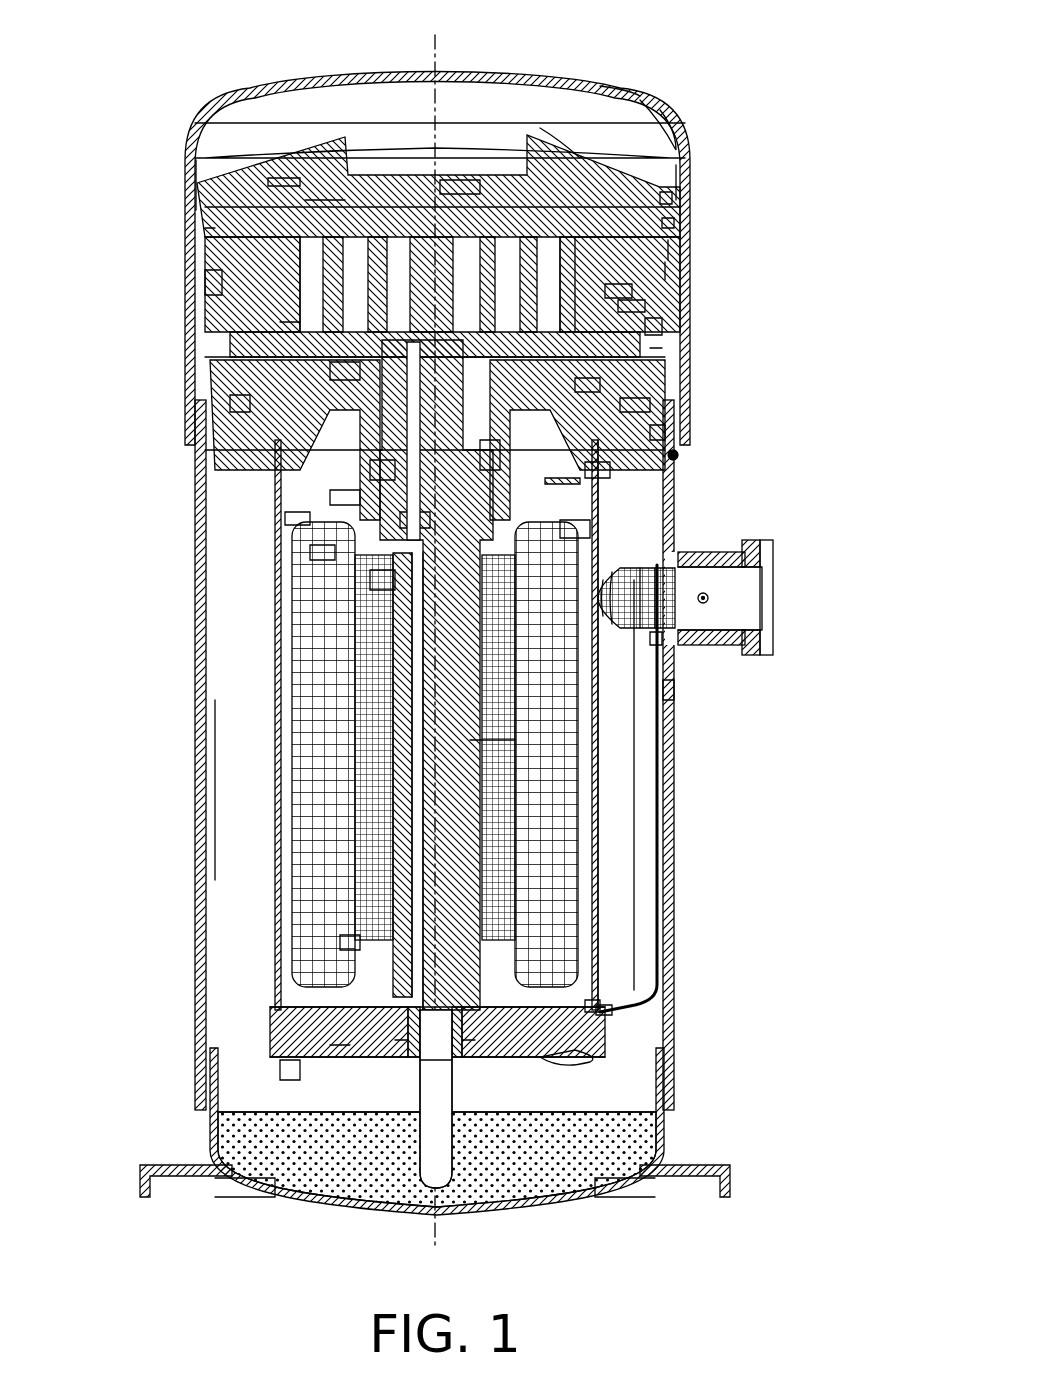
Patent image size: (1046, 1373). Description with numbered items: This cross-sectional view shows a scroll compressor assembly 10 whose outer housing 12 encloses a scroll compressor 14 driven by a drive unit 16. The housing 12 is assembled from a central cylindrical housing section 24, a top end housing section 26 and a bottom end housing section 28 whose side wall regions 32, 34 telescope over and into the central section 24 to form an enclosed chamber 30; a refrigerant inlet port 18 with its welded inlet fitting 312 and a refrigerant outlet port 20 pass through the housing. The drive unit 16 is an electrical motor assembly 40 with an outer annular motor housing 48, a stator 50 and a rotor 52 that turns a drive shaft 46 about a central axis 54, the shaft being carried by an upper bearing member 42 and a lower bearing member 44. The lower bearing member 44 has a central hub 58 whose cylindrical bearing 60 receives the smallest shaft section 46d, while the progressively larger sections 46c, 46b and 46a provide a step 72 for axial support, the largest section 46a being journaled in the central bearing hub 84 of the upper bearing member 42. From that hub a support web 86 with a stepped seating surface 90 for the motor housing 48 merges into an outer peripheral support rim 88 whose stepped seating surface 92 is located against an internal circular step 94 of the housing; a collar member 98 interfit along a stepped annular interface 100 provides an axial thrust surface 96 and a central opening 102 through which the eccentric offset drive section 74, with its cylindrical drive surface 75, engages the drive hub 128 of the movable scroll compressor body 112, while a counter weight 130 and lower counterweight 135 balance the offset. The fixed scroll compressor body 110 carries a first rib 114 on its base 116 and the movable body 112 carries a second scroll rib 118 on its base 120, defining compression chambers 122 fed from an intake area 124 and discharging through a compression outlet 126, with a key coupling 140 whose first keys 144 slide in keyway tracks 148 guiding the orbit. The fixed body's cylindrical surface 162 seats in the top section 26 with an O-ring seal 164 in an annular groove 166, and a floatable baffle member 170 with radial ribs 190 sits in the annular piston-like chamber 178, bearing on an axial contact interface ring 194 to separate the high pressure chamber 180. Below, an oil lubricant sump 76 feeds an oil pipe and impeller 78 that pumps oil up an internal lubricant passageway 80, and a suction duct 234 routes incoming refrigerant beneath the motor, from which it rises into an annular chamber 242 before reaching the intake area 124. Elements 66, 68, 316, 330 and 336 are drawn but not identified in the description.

The scroll compressor assembly 10 is at (168, 663).
The outer housing 12 is at (795, 657).
The scroll compressor 14 is at (668, 352).
The drive unit 16 is at (672, 786).
The refrigerant inlet port 18 is at (750, 600).
The refrigerant outlet port 20 is at (690, 100).
The central cylindrical housing section 24 is at (672, 690).
The top end housing section 26 is at (615, 72).
The bottom end housing section 28 is at (555, 1198).
The enclosed chamber 30 is at (252, 790).
The top side wall region 32 is at (668, 272).
The bottom side wall region 34 is at (662, 1128).
The electrical motor assembly 40 is at (612, 832).
The upper bearing member 42 is at (605, 470).
The lower bearing member 44 is at (620, 1035).
The drive shaft 46 is at (500, 735).
The largest diameter section 46a is at (758, 556).
The drive shaft diameter section 46b is at (660, 640).
The next smallest diameter section 46c is at (505, 748).
The smallest diameter section 46d is at (612, 992).
The outer annular motor housing 48 is at (318, 848).
The stator 50 is at (300, 920).
The rotor 52 is at (350, 792).
The central axis 54 is at (432, 42).
The central cylindrical hub 58 is at (400, 1045).
The cylindrical bearing 60 is at (470, 1045).
The lower bearing support 66 is at (292, 1082).
The fastener 68 is at (342, 1052).
The step 72 is at (330, 1040).
The offset eccentric drive section 74 is at (680, 455).
The cylindrical drive surface 75 is at (300, 520).
The oil lubricant sump 76 is at (600, 1150).
The oil lubricant pipe and impeller 78 is at (428, 1160).
The internal lubricant passageway 80 is at (418, 902).
The central bearing hub 84 is at (385, 582).
The support web 86 is at (420, 522).
The outer peripheral support rim 88 is at (648, 406).
The annular stepped seating surface 90 is at (585, 530).
The outer annular stepped seating surface 92 is at (664, 432).
The internal circular step 94 is at (372, 432).
The axial thrust surface 96 is at (682, 163).
The collar member 98 is at (350, 500).
The stepped annular interface 100 is at (384, 470).
The central opening 102 is at (330, 558).
The fixed scroll compressor body 110 is at (278, 330).
The movable scroll compressor body 112 is at (268, 345).
The first rib 114 is at (214, 280).
The plate-like base 116 is at (276, 176).
The second scroll rib 118 is at (310, 282).
The plate-like base 120 is at (342, 372).
The compression chambers 122 is at (322, 238).
The intake area 124 is at (290, 330).
The compression outlet 126 is at (482, 188).
The cylindrical bushing drive hub 128 is at (600, 386).
The counter weight 130 is at (495, 462).
The lower counterweight 135 is at (352, 942).
The key coupling 140 is at (645, 305).
The first keys 144 is at (632, 290).
The keyway tracks 148 is at (660, 326).
The cylindrical surface 162 is at (670, 252).
The O-ring seal 164 is at (676, 226).
The annular groove 166 is at (672, 200).
The floatable baffle member 170 is at (543, 130).
The annular piston-like chamber 178 is at (196, 205).
The high pressure chamber 180 is at (462, 92).
The radially extending ribs 190 is at (630, 160).
The axial contact interface ring 194 is at (205, 230).
The suction duct 234 is at (640, 905).
The annular chamber 242 is at (232, 712).
The inlet fitting 312 is at (758, 642).
The terminal cap 316 is at (665, 598).
The wire clip 330 is at (620, 1010).
The wire guide 336 is at (590, 482).